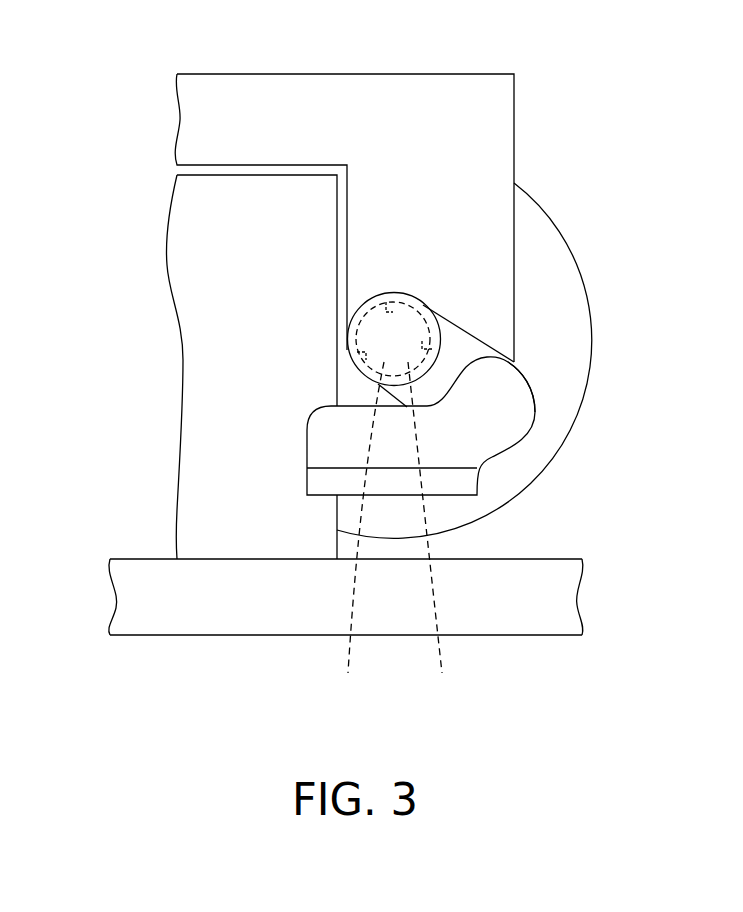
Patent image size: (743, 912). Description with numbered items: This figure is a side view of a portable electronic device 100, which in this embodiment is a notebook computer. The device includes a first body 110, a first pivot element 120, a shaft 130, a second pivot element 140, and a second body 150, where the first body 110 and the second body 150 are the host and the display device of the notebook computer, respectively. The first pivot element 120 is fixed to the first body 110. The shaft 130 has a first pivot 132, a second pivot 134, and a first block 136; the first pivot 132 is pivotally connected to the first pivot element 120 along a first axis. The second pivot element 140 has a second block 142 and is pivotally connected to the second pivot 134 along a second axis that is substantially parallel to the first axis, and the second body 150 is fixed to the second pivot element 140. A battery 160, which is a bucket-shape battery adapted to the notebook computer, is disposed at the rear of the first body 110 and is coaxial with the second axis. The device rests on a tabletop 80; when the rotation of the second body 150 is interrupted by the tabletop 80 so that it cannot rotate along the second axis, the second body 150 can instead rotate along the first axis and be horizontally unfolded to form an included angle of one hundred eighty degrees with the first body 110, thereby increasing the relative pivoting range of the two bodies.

The tabletop 80 is at (538, 558).
The portable electronic device 100 is at (692, 687).
The first body 110 is at (233, 335).
The first pivot element 120 is at (503, 422).
The shaft 130 is at (460, 350).
The first pivot 132 is at (533, 373).
The second pivot 134 is at (397, 285).
The first block 136 is at (431, 537).
The second pivot element 140 is at (412, 322).
The second block 142 is at (357, 537).
The second body 150 is at (482, 110).
The battery 160 is at (547, 272).